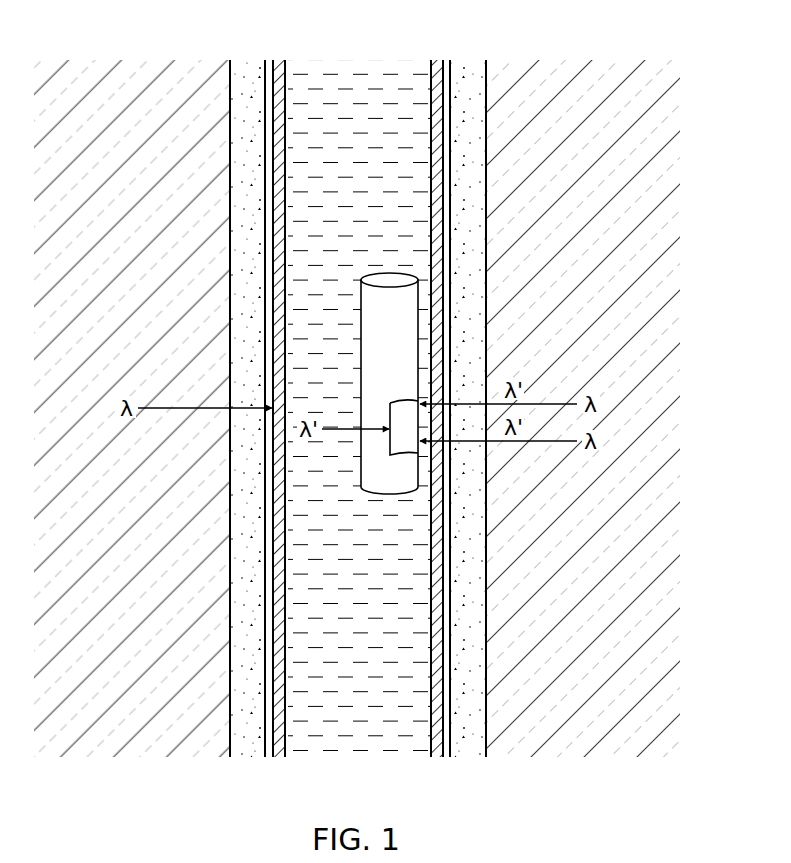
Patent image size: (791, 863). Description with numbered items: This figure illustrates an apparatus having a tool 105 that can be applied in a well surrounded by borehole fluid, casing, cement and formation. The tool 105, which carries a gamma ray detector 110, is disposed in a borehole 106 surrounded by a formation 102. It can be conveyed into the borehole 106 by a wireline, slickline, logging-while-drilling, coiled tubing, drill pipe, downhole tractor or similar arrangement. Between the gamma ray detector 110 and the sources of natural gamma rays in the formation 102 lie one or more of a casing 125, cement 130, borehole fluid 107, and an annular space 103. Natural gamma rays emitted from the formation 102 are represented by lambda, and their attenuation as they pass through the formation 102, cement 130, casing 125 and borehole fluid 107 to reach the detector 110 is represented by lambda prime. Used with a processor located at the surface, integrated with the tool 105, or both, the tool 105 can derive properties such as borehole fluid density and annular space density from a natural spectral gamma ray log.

The formation 102 is at (148, 203).
The annular space 103 is at (450, 613).
The tool 105 is at (389, 280).
The borehole 106 is at (584, 30).
The borehole fluid 107 is at (346, 734).
The gamma ray detector 110 is at (405, 402).
The casing 125 is at (437, 62).
The cement 130 is at (248, 62).